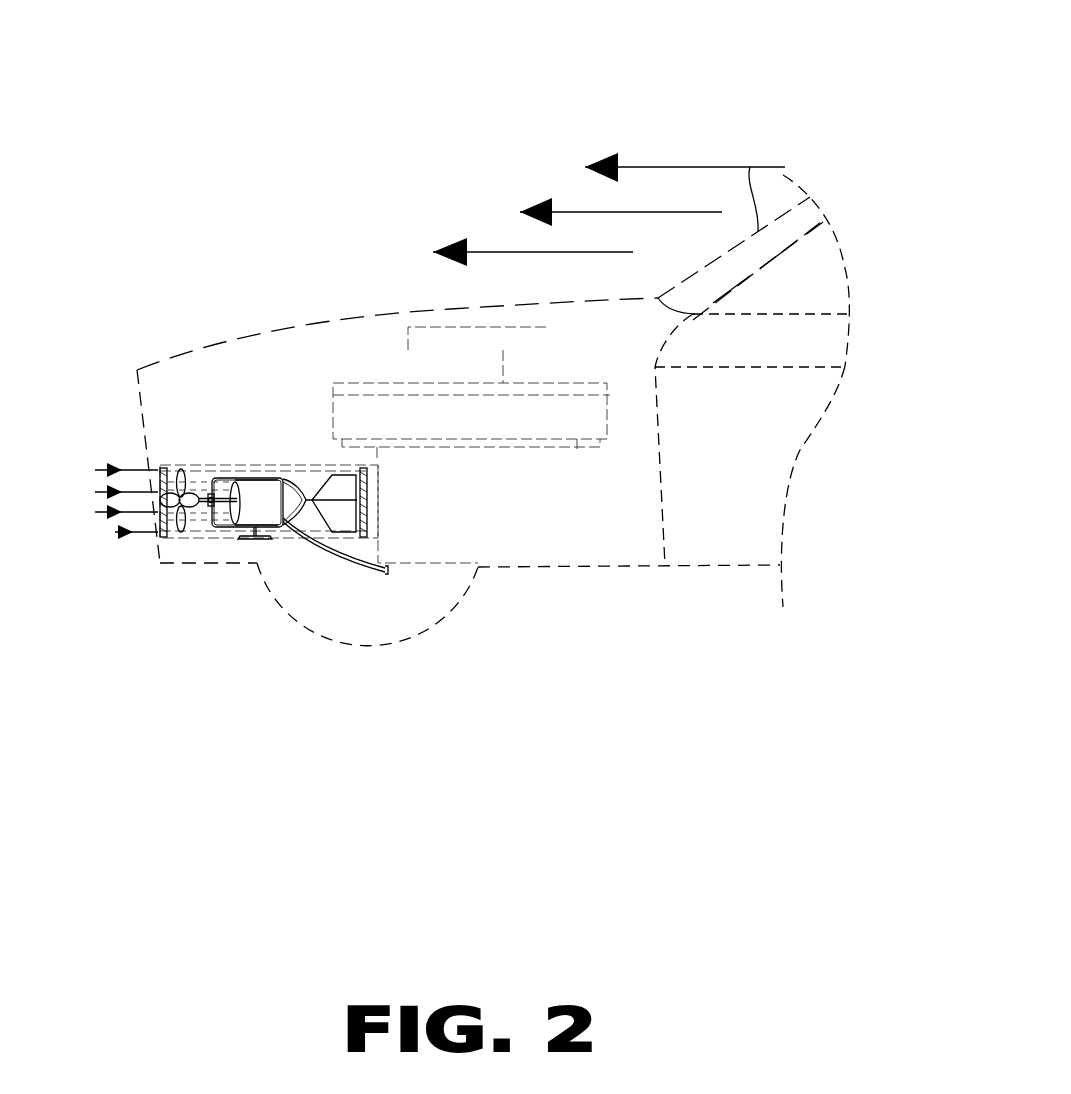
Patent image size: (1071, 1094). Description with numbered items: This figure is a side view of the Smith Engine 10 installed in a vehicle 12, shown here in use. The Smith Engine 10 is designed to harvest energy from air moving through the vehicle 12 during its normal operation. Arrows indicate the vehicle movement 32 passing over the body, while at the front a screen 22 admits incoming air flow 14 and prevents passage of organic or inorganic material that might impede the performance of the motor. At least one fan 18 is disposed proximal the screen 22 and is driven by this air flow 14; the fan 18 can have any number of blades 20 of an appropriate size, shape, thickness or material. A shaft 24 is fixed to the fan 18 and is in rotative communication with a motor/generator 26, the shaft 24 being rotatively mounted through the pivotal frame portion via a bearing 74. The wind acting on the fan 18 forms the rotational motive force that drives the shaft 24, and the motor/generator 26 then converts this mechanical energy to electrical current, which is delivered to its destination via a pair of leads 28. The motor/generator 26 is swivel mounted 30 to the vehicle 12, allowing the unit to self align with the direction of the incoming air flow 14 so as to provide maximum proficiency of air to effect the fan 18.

The Smith Engine 10 is at (746, 96).
The vehicle 12 is at (347, 317).
The air flow 14 is at (133, 535).
The fan 18 is at (196, 598).
The blades 20 is at (192, 506).
The screen 22 is at (160, 478).
The shaft 24 is at (222, 488).
The motor/generator 26 is at (272, 484).
The leads 28 is at (331, 560).
The swivel mount 30 is at (255, 540).
The vehicle movement 32 is at (672, 168).
The bearing 74 is at (217, 495).